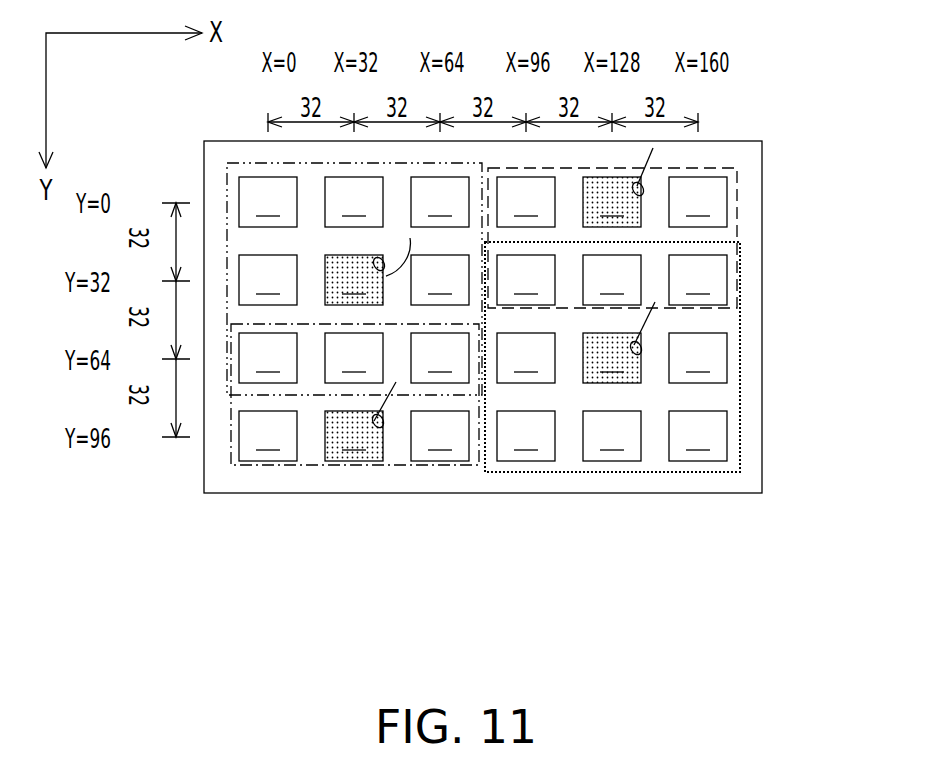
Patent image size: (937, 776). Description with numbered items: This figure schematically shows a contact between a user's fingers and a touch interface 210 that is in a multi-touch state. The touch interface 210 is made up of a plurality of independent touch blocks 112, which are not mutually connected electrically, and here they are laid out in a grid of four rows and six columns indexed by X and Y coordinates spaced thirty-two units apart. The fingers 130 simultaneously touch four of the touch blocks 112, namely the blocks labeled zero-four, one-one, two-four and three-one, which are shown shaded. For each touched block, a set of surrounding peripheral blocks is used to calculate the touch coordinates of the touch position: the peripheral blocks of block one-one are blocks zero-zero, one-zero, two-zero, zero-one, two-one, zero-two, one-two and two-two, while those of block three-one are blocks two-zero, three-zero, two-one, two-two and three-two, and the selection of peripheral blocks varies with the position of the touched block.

The finger 130 is at (382, 262).
The touch block 112 is at (268, 461).
The touch interface 210 is at (213, 495).